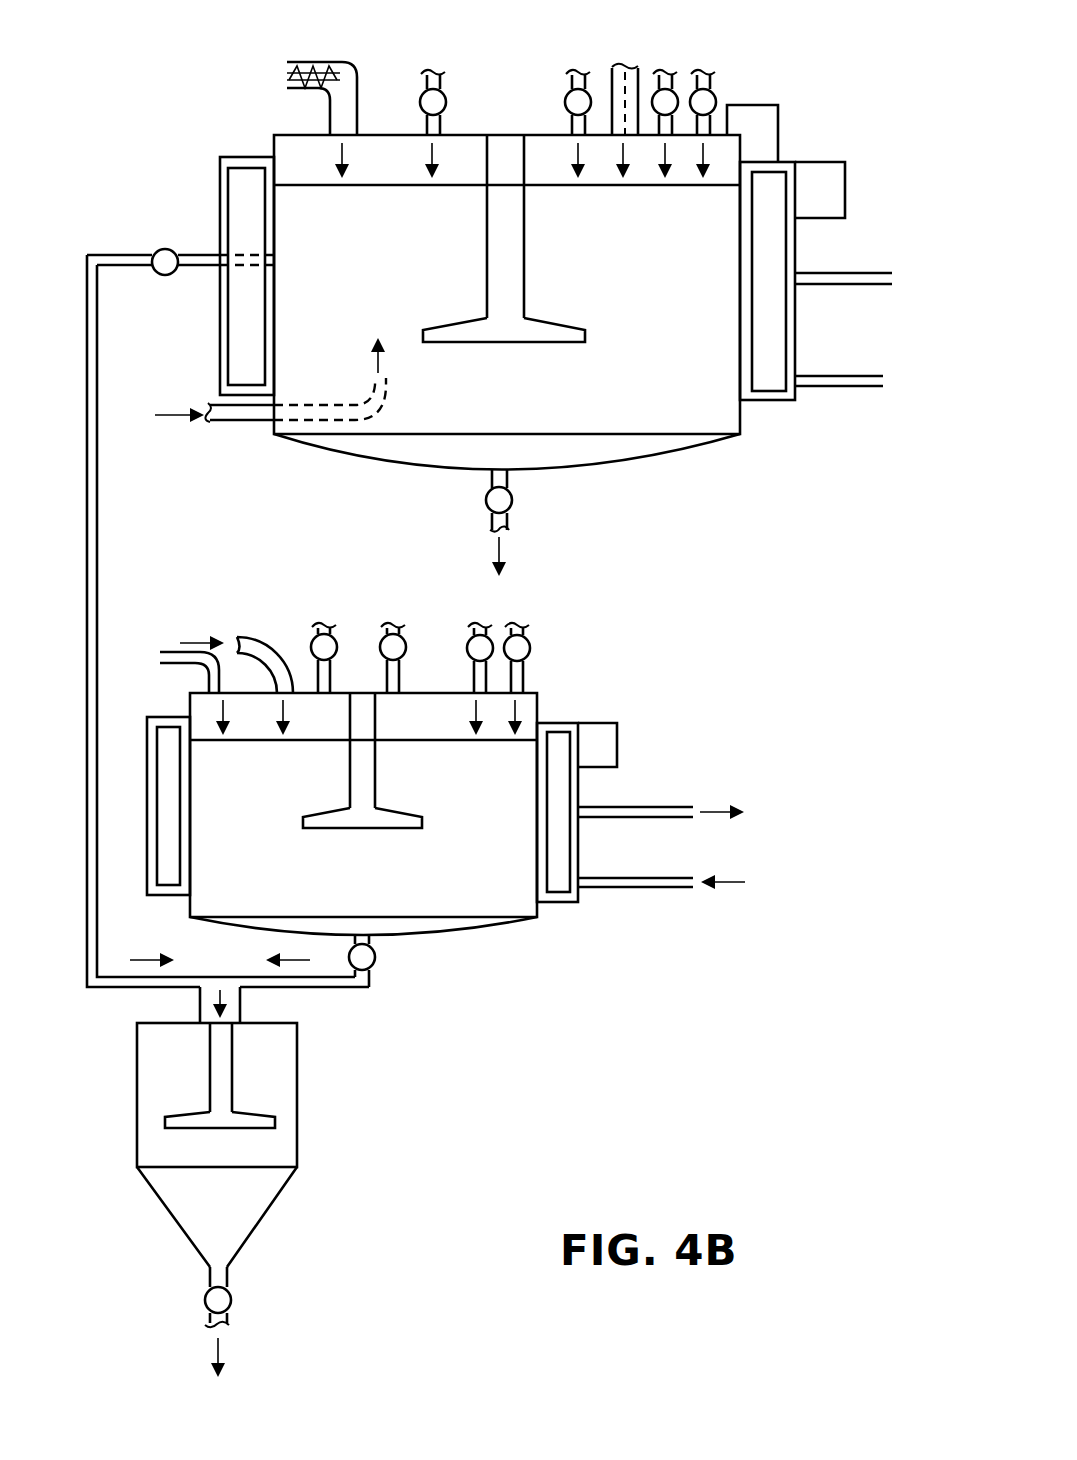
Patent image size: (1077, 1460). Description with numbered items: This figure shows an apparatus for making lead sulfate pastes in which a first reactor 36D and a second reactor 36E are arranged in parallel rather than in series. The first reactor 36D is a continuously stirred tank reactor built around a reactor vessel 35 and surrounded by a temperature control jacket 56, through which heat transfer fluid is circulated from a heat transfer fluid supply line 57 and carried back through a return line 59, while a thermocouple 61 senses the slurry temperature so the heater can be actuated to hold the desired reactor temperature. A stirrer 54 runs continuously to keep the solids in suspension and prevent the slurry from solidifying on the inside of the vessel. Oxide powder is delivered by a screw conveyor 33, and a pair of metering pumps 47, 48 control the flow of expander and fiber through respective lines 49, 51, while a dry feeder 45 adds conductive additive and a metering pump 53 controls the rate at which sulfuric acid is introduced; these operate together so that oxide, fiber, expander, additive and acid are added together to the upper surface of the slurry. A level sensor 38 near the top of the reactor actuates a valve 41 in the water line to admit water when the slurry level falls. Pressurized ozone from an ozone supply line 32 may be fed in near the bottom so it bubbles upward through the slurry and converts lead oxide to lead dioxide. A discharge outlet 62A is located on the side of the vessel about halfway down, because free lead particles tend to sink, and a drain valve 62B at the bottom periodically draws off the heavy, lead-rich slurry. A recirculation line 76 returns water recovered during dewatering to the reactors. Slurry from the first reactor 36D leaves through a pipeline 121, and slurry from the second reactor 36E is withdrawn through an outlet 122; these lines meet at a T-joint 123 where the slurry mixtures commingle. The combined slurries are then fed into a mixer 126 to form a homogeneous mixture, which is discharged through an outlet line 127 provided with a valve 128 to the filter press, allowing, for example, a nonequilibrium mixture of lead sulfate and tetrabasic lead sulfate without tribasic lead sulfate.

The screw conveyor 33 is at (290, 72).
The expander line 49 is at (428, 82).
The metering pump 47 is at (426, 118).
The metering pump 48 is at (566, 92).
The fiber line 51 is at (570, 110).
The dry feeder 45 is at (638, 68).
The metering pump 53 is at (676, 92).
The valve 41 is at (716, 98).
The level sensor 38 is at (768, 142).
The thermocouple 61 is at (838, 178).
The temperature control jacket 56 is at (242, 212).
The pipeline 121 is at (87, 292).
The discharge outlet 62A is at (246, 275).
The stirrer 54 is at (502, 148).
The return line 59 is at (850, 278).
The heat transfer fluid supply line 57 is at (852, 386).
The ozone supply line 32 is at (224, 420).
The reactor vessel 35 is at (270, 425).
The first reactor 36D is at (700, 428).
The drain valve 62B is at (486, 512).
The recirculation line 76 is at (180, 660).
The second reactor 36E is at (196, 918).
The T-joint 123 is at (236, 990).
The outlet 122 is at (370, 985).
The mixer 126 is at (280, 1078).
The outlet line 127 is at (228, 1282).
The valve 128 is at (228, 1306).